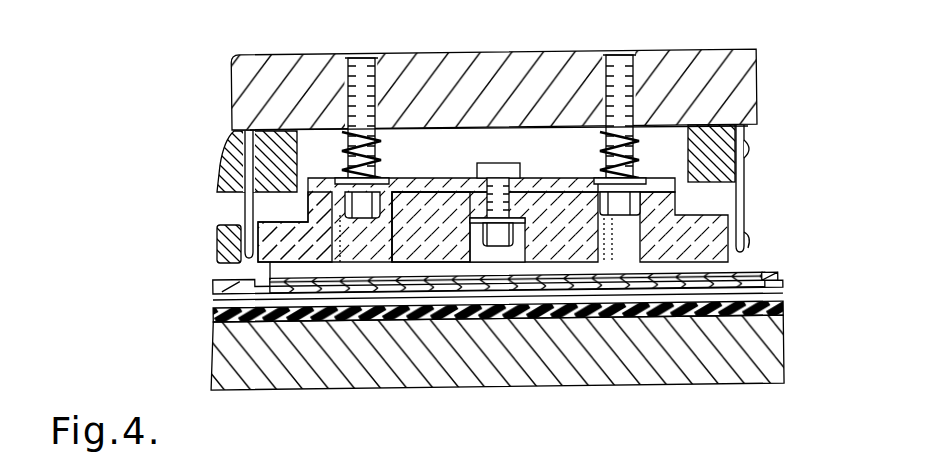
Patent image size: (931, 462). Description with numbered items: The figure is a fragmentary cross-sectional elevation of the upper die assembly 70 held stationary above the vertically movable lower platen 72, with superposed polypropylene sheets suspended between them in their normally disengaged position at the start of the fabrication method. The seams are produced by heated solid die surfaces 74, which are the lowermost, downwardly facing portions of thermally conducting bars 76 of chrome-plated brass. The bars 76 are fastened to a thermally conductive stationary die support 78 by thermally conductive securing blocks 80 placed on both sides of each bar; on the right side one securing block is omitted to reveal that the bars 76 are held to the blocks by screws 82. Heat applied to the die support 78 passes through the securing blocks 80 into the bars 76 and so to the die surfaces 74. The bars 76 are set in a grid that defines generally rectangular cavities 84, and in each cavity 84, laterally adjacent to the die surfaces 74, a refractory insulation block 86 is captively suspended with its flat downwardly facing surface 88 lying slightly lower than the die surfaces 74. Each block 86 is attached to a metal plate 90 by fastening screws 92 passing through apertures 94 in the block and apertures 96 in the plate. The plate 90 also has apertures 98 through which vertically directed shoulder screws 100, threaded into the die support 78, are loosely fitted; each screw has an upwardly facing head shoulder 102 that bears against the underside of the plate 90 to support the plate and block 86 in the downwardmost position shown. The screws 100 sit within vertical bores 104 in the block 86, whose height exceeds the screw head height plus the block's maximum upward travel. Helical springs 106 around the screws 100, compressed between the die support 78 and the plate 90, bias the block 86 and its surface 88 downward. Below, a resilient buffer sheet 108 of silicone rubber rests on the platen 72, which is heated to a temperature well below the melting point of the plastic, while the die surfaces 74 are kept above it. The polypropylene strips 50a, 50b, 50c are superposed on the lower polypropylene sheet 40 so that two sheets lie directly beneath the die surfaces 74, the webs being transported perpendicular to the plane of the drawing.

The upper die assembly 70 is at (158, 128).
The lower platen 72 is at (215, 326).
The die surfaces 74 is at (228, 252).
The thermally conducting bars 76 is at (246, 236).
The stationary die support 78 is at (492, 60).
The securing blocks 80 is at (272, 142).
The screws 82 is at (750, 150).
The cavities 84 is at (456, 164).
The refractory insulation block 86 is at (582, 236).
The downwardly facing surface 88 is at (295, 266).
The metal plate 90 is at (432, 180).
The fastening screws 92 is at (514, 224).
The apertures 94 is at (488, 226).
The apertures 96 is at (520, 176).
The apertures 98 is at (390, 182).
The shoulder screws 100 is at (356, 62).
The head shoulder 102 is at (356, 216).
The vertical bores 104 is at (640, 216).
The helical springs 106 is at (356, 160).
The buffer sheet 108 is at (783, 302).
The lower polypropylene sheet 40 is at (218, 310).
The polypropylene sheet 50a is at (210, 278).
The polypropylene sheet 50b is at (747, 284).
The polypropylene sheet 50c is at (782, 282).